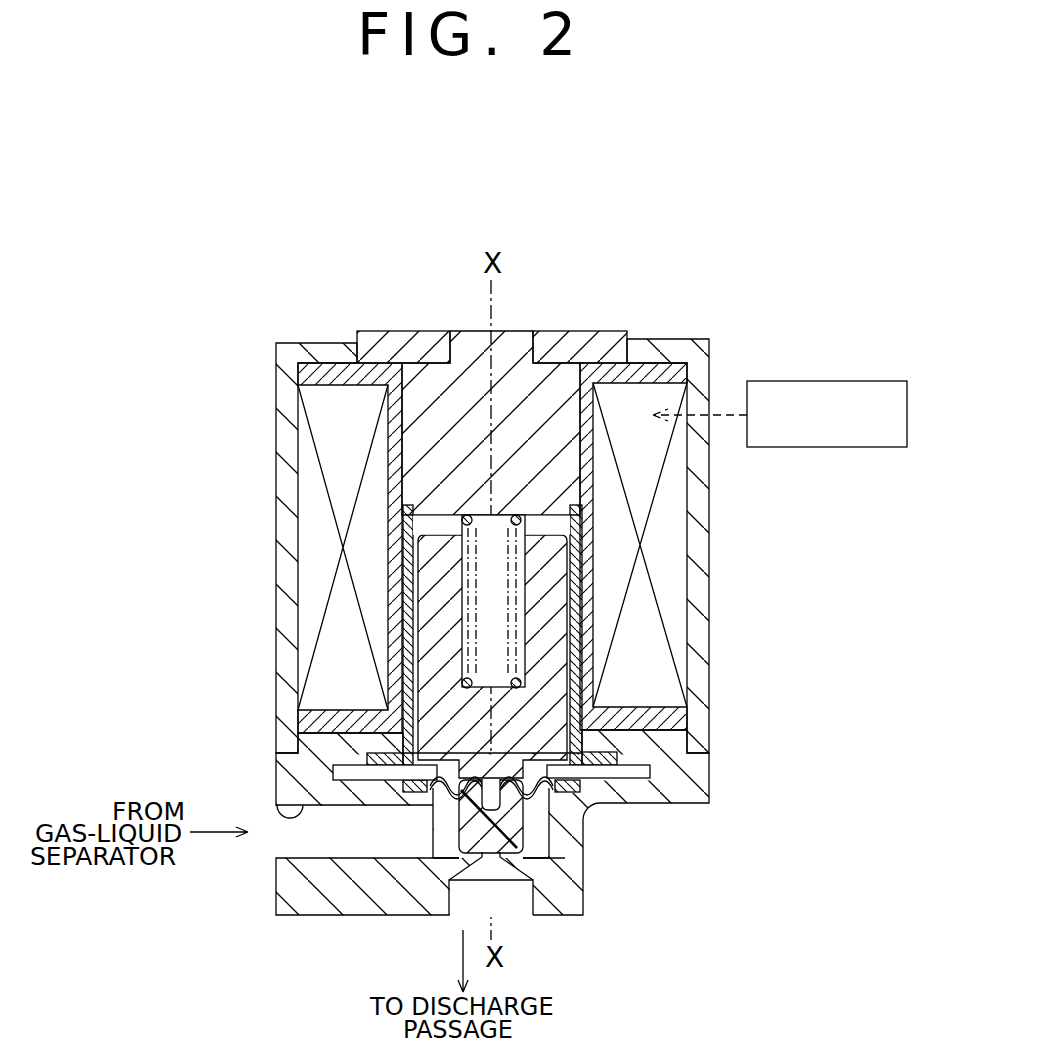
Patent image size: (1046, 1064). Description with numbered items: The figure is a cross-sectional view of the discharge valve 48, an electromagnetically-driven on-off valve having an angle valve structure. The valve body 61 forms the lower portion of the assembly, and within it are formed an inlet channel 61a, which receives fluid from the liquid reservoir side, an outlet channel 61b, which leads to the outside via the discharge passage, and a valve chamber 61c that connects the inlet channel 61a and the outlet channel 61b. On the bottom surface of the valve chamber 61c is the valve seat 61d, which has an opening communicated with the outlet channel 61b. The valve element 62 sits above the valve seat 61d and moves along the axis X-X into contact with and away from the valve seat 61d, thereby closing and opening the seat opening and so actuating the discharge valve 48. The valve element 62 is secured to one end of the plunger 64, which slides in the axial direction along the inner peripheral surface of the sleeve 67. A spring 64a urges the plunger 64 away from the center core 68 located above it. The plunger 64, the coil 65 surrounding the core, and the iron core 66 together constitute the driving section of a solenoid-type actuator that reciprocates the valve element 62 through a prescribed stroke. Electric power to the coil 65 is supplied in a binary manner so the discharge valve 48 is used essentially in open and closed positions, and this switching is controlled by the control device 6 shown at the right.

The discharge valve 48 is at (224, 362).
The control device 6 is at (870, 381).
The center core 68 is at (510, 332).
The sleeve 67 is at (582, 570).
The coil 65 is at (690, 633).
The iron core 66 is at (593, 697).
The plunger 64 is at (437, 696).
The spring 64a is at (465, 680).
The valve element 62 is at (520, 810).
The valve body 61 is at (313, 903).
The inlet channel 61a is at (278, 806).
The outlet channel 61b is at (526, 897).
The valve chamber 61c is at (545, 853).
The valve seat 61d is at (540, 892).